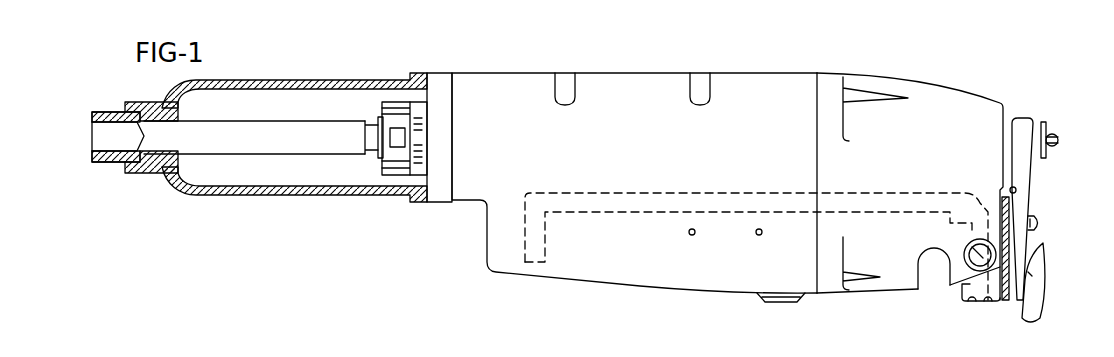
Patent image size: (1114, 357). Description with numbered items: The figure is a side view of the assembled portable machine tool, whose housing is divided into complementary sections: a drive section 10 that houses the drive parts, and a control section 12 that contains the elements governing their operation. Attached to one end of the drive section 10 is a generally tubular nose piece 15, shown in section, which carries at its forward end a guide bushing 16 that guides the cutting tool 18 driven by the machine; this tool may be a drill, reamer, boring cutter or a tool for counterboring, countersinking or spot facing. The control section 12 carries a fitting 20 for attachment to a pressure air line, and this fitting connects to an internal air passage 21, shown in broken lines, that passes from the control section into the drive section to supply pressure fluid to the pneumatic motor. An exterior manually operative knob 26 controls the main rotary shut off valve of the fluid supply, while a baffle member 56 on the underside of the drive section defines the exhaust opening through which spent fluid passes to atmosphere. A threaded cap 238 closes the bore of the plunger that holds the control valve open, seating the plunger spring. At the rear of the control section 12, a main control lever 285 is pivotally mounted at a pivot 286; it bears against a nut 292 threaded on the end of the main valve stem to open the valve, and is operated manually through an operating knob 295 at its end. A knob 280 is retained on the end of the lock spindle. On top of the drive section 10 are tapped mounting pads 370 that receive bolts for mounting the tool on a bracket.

The drive section 10 is at (721, 66).
The control section 12 is at (911, 72).
The nose piece 15 is at (330, 78).
The guide bushing 16 is at (118, 166).
The cutting tool 18 is at (265, 128).
The fitting 20 is at (983, 303).
The internal air passage 21 is at (712, 198).
The manually operative knob 26 is at (966, 246).
The baffle member 56 is at (782, 303).
The threaded cap 238 is at (933, 292).
The knob 280 is at (1045, 120).
The main control lever 285 is at (1020, 168).
The pivot 286 is at (1016, 191).
The nut 292 is at (1040, 223).
The operating knob 295 is at (1047, 278).
The mounting pads 370 is at (565, 77).